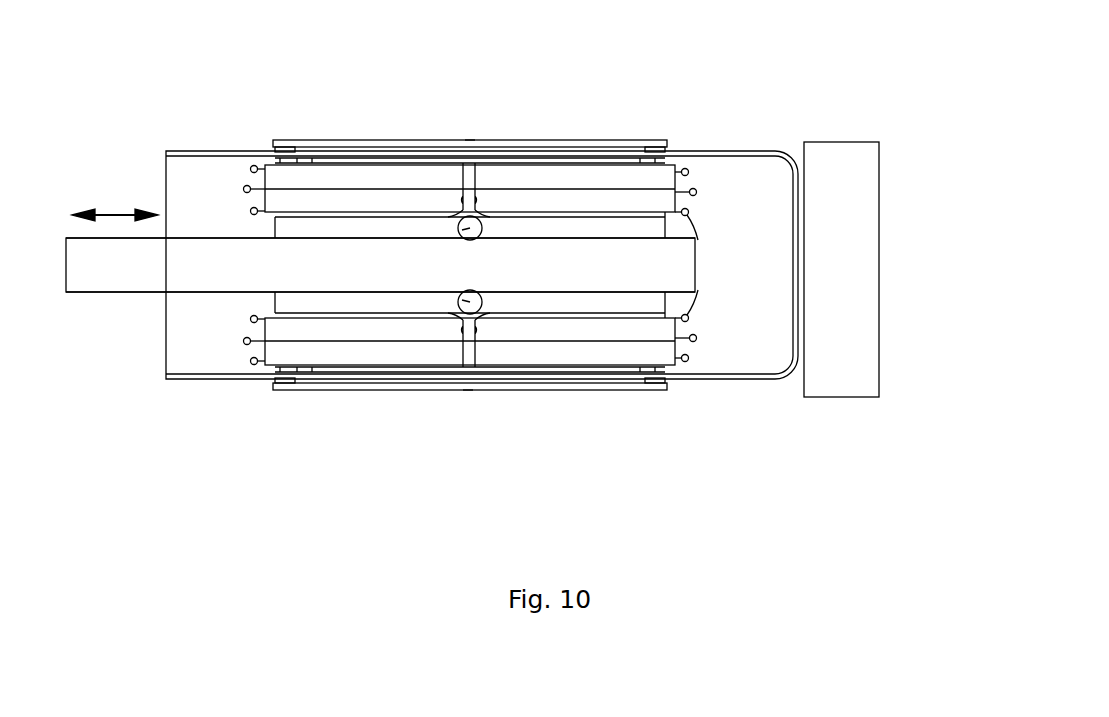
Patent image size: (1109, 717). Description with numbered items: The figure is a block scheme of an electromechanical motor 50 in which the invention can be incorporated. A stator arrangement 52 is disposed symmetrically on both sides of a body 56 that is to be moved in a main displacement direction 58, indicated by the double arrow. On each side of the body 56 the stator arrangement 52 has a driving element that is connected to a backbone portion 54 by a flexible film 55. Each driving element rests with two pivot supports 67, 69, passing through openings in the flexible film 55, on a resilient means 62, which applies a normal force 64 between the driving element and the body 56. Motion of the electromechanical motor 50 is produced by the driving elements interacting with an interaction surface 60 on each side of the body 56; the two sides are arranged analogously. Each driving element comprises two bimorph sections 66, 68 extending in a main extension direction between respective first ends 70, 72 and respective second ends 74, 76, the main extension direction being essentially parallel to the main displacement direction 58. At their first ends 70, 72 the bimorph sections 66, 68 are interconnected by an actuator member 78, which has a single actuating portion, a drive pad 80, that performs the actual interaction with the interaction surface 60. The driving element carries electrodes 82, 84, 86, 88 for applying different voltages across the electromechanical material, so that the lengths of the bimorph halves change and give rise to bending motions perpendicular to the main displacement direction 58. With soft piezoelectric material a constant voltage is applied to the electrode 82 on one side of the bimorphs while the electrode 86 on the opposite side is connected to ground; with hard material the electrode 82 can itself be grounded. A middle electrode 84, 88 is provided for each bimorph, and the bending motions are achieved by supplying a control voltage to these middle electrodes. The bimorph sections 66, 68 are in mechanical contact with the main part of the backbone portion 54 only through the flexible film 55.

The electromechanical motor 50 is at (318, 508).
The stator arrangement 52 is at (120, 372).
The backbone portion 54 is at (826, 396).
The flexible film 55 is at (343, 140).
The body 56 is at (103, 268).
The main displacement direction 58 is at (118, 213).
The interaction surface 60 is at (196, 238).
The resilient means 62 is at (525, 140).
The normal force 64 is at (470, 116).
The bimorph section 66 is at (598, 162).
The pivot support 67 is at (650, 140).
The bimorph section 68 is at (362, 170).
The pivot support 69 is at (290, 140).
The first end 70 is at (492, 214).
The first end 72 is at (452, 216).
The second end 74 is at (689, 212).
The second end 76 is at (250, 211).
The actuator member 78 is at (463, 178).
The drive pad 80 is at (462, 231).
The electrode 82 is at (698, 240).
The middle electrode 84 is at (697, 192).
The electrode 86 is at (688, 169).
The middle electrode 88 is at (243, 189).